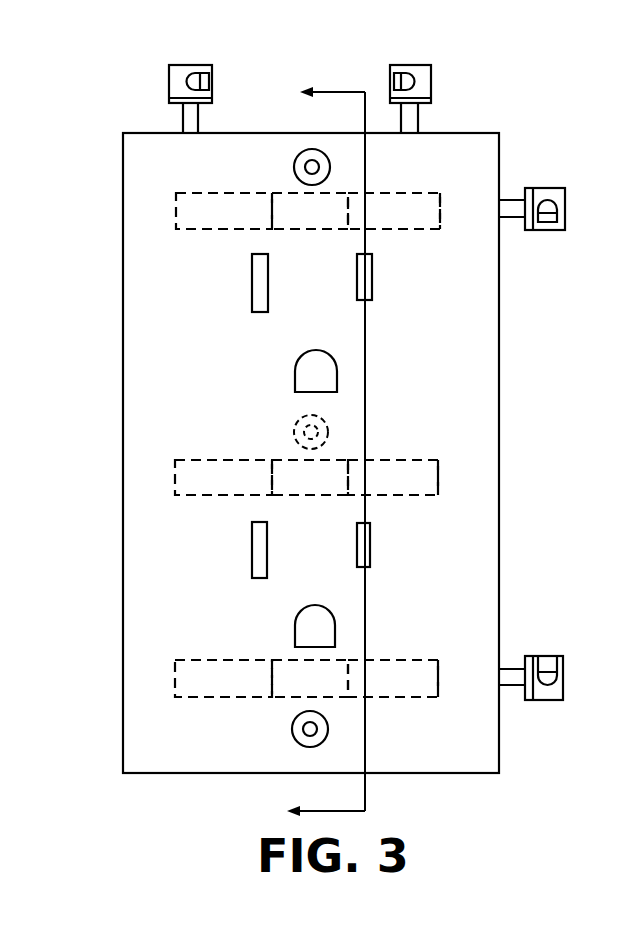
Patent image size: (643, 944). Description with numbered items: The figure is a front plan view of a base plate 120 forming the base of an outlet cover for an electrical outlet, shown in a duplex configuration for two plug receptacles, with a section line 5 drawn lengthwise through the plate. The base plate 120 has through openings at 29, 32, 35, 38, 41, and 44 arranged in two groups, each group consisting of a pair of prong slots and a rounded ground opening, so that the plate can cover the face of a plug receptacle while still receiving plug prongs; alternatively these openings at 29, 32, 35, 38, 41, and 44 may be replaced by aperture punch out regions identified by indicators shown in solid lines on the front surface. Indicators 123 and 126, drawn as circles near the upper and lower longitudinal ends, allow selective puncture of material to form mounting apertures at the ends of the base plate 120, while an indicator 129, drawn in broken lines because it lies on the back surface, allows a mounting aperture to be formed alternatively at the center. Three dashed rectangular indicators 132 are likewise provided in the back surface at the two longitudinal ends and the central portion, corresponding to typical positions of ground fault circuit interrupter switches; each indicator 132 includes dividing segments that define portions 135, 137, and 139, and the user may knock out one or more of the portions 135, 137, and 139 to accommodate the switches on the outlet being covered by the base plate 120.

The base plate 120 is at (524, 110).
The section line 5- 5 is at (316, 451).
The indicator 123 is at (330, 167).
The indicator 126 is at (328, 729).
The indicator 129 is at (325, 418).
The indicator 132 is at (440, 207).
The portion 135 is at (205, 207).
The portion 137 is at (290, 208).
The portion 139 is at (390, 205).
The through opening 29 is at (252, 277).
The through opening 32 is at (372, 272).
The through opening 35 is at (337, 367).
The through opening 38 is at (252, 552).
The through opening 41 is at (370, 538).
The through opening 44 is at (335, 628).